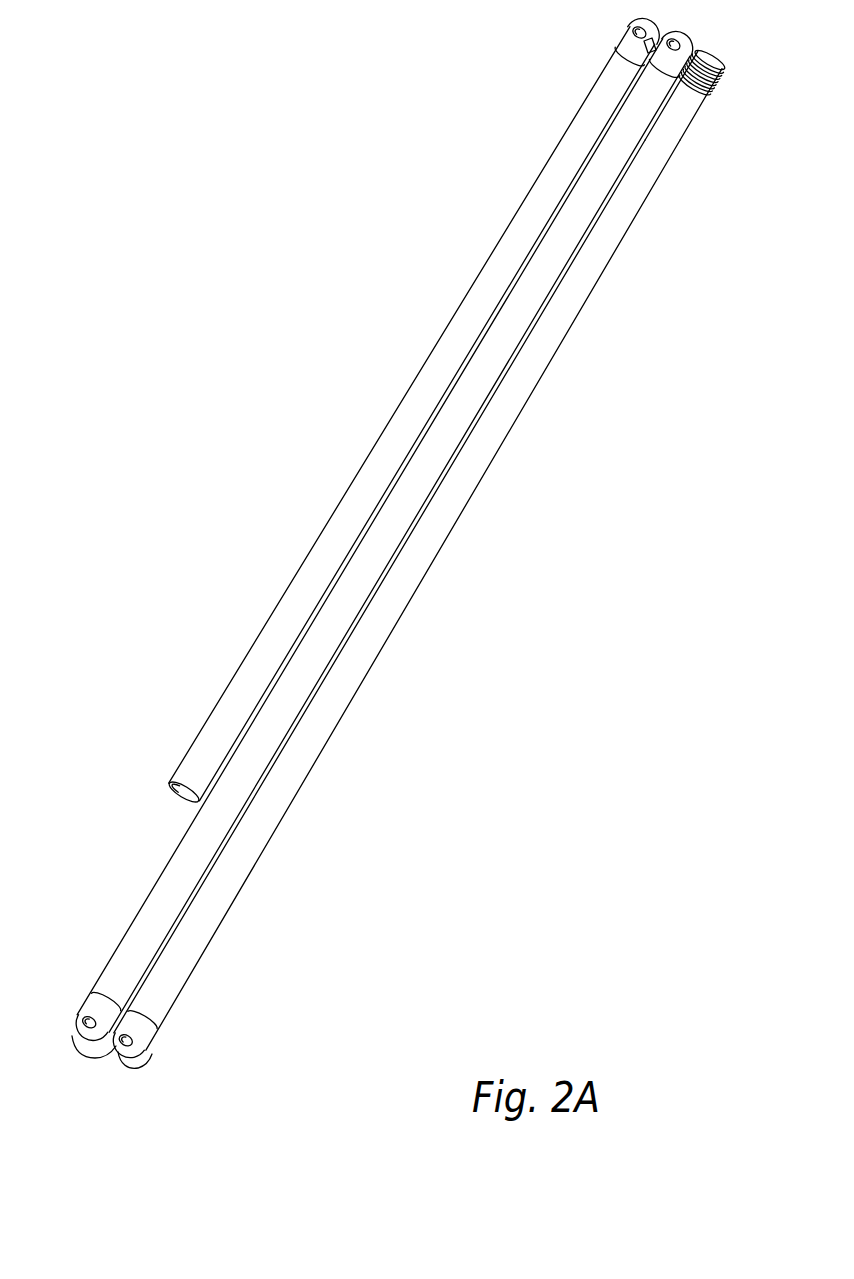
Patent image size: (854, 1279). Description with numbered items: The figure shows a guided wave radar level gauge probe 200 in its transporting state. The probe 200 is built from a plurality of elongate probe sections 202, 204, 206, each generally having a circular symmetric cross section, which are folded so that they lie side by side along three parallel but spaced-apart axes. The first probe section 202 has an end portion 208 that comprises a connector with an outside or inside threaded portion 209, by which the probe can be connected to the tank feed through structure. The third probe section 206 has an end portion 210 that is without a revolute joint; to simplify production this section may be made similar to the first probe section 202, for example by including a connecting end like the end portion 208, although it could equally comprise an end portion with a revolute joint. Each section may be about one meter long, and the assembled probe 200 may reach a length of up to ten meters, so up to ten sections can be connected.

The probe 200 is at (445, 699).
The first probe section 202 is at (495, 425).
The probe section 204 is at (420, 470).
The third probe section 206 is at (392, 458).
The end portion 208 is at (703, 53).
The threaded portion 209 is at (714, 72).
The end portion 210 is at (185, 792).